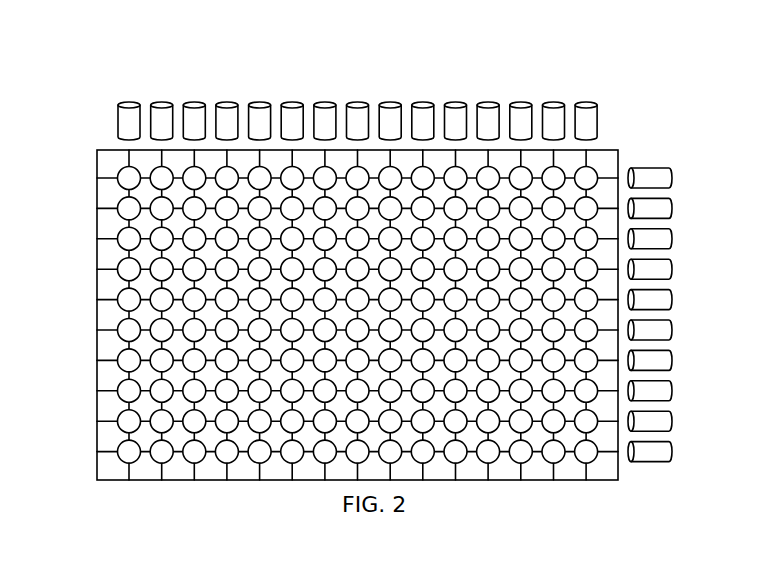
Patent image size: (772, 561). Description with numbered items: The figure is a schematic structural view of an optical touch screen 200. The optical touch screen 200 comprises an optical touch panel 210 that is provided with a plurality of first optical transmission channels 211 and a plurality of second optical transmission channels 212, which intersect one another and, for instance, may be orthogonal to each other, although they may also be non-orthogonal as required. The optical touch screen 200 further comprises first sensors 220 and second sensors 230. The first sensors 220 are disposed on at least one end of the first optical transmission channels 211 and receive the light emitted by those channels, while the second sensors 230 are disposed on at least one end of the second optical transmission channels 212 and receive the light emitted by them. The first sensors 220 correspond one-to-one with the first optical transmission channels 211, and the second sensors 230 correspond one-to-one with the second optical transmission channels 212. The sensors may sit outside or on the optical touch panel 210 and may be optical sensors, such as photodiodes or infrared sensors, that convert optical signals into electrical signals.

The optical touch screen 200 is at (400, 42).
The optical touch panel 210 is at (152, 230).
The first optical transmission channels 211 is at (98, 178).
The second optical transmission channels 212 is at (130, 168).
The first sensors 220 is at (650, 241).
The second sensors 230 is at (552, 119).